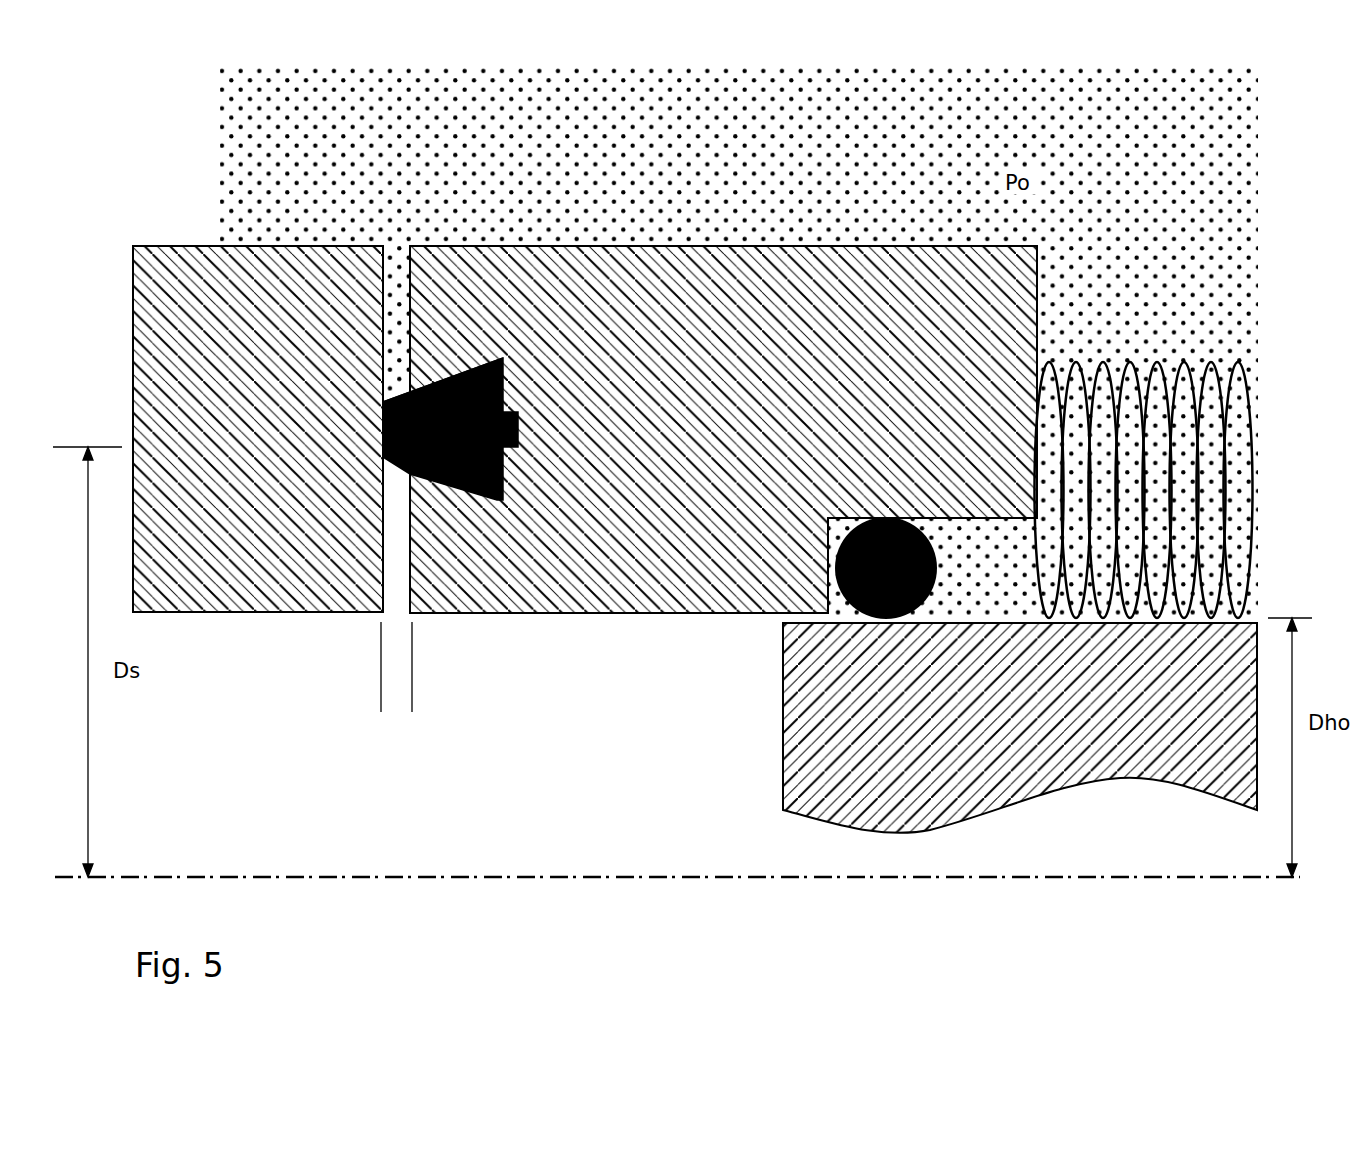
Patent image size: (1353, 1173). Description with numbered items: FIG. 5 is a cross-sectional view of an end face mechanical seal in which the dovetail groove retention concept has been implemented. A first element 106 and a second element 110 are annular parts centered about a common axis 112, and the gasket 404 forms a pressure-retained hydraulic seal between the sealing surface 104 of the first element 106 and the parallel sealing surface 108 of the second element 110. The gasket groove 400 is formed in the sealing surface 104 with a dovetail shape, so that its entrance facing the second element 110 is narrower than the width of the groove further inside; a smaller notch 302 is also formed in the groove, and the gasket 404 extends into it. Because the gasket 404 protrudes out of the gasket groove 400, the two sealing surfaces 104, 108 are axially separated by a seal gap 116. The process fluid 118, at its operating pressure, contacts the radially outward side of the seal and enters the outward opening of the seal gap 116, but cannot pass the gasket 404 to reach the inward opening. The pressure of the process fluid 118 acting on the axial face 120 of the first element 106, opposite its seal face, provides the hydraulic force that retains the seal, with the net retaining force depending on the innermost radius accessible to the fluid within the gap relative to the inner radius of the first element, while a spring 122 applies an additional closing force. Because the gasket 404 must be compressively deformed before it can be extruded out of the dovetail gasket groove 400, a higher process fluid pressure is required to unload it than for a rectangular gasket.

The sealing surface 104 is at (412, 310).
The first element 106 is at (789, 423).
The sealing surface 108 is at (381, 308).
The second element 110 is at (294, 483).
The common axis 112 is at (624, 876).
The seal gap 116 is at (325, 691).
The process fluid 118 is at (686, 189).
The axial face 120 is at (1034, 315).
The spring 122 is at (1247, 437).
The notch 302 is at (519, 430).
The gasket groove 400 is at (508, 382).
The gasket 404 is at (472, 436).